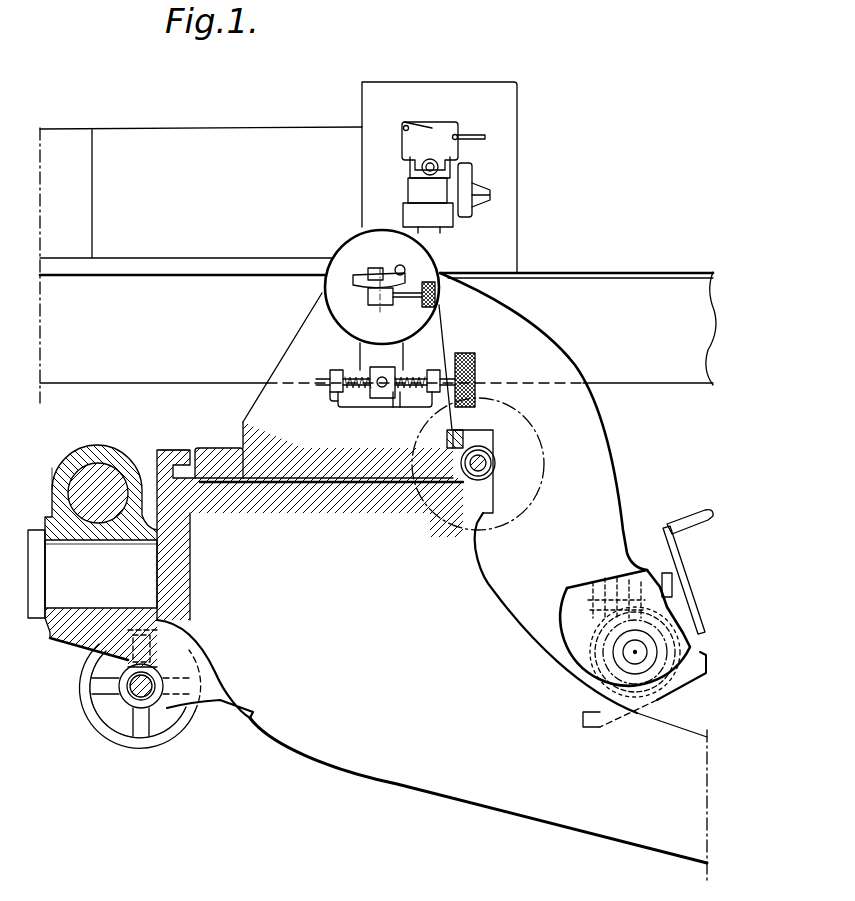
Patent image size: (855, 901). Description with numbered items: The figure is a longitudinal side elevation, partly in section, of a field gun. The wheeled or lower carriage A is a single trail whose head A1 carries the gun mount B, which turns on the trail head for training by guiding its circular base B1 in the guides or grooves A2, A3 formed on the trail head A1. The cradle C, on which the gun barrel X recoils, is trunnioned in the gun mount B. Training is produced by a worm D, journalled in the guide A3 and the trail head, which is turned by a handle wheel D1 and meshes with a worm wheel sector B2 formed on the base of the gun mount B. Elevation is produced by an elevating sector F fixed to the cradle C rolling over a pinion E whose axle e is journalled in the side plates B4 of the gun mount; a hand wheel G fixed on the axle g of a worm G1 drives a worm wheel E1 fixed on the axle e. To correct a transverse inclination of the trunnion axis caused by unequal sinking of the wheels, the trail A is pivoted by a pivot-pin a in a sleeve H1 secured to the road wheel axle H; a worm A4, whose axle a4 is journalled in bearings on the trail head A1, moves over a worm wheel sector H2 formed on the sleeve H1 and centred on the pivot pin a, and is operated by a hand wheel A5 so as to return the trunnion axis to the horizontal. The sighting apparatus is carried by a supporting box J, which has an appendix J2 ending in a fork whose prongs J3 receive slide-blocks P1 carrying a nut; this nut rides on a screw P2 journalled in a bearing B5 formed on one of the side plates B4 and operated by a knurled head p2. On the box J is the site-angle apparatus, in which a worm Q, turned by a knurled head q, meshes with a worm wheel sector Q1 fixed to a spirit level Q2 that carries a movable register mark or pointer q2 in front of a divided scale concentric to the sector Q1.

The gun barrel X is at (232, 145).
The cradle C is at (148, 373).
The supporting box J is at (346, 247).
The appendix J2 is at (370, 352).
The prongs J3 is at (398, 401).
The worm Q is at (378, 308).
The worm wheel sector Q1 is at (368, 290).
The spirit level Q2 is at (381, 268).
The knurled head q is at (437, 296).
The movable register mark or pointer q2 is at (366, 278).
The slide-blocks P1 is at (398, 380).
The screw P2 is at (342, 396).
The knurled head p2 is at (476, 372).
The gun mount B is at (348, 460).
The circular base B1 is at (217, 458).
The worm wheel sector B2 is at (452, 478).
The side plates B4 is at (290, 362).
The bearing B5 is at (357, 405).
The wheeled or lower carriage A is at (600, 822).
The trail head A1 is at (323, 735).
The guide or groove A2 is at (175, 458).
The guide or groove A3 is at (485, 440).
The worm A4 is at (125, 693).
The axle a4 is at (140, 697).
The hand wheel A5 is at (168, 733).
The pivot-pin a is at (66, 597).
The worm D is at (487, 468).
The handle wheel D1 is at (508, 522).
The road wheel axle H is at (104, 477).
The sleeve H1 is at (55, 466).
The worm wheel sector H2 is at (160, 667).
The pinion E is at (610, 653).
The worm wheel E1 is at (607, 625).
The axle e is at (637, 653).
The elevating sector F is at (694, 678).
The hand wheel G is at (676, 555).
The worm G1 is at (637, 573).
The axle g is at (668, 590).